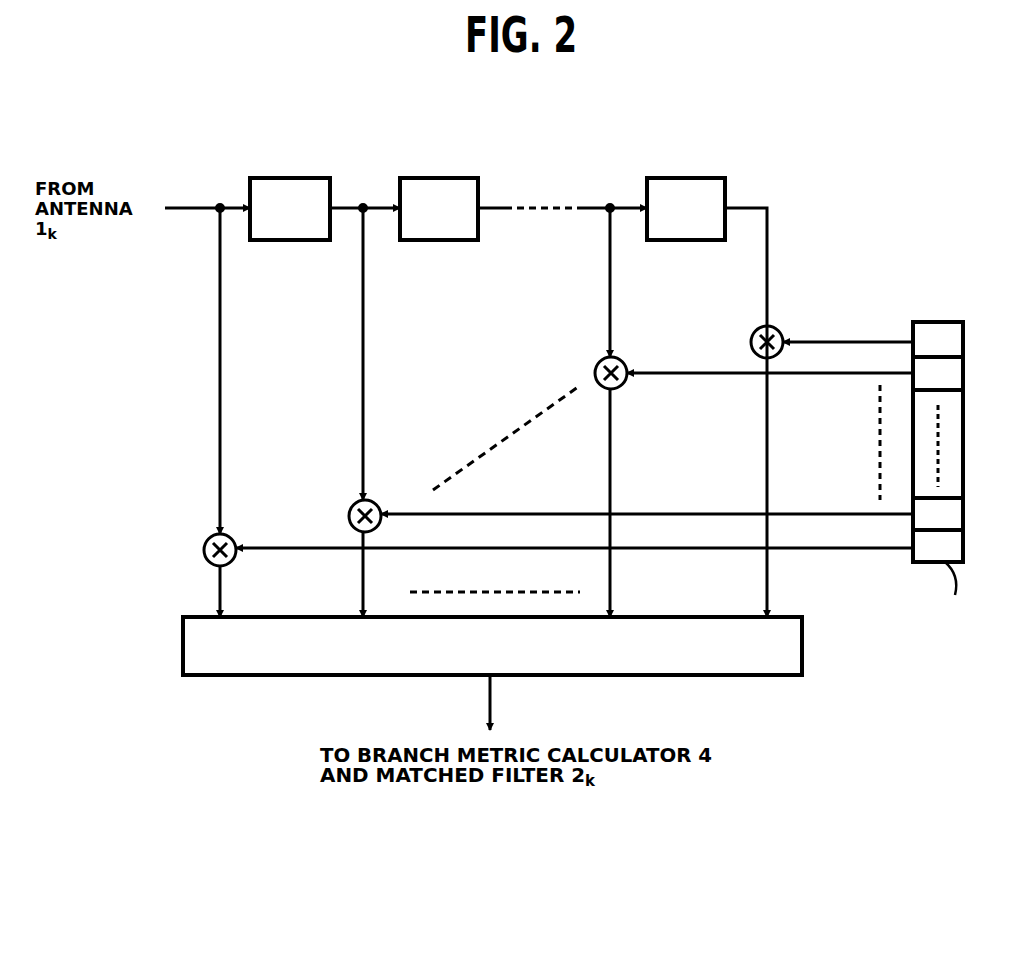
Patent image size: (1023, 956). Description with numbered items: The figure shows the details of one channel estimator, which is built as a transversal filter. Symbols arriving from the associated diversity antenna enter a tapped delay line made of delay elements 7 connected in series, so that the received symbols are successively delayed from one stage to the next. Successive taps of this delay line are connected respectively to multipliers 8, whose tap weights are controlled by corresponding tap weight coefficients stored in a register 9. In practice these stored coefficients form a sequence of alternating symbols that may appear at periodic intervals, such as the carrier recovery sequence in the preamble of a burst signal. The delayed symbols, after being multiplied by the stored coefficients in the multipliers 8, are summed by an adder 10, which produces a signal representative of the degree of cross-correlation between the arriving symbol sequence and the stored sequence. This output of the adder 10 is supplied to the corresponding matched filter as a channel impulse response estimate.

The delay elements 7 is at (270, 240).
The multipliers 8 is at (797, 312).
The register 9 is at (965, 328).
The adder 10 is at (804, 635).